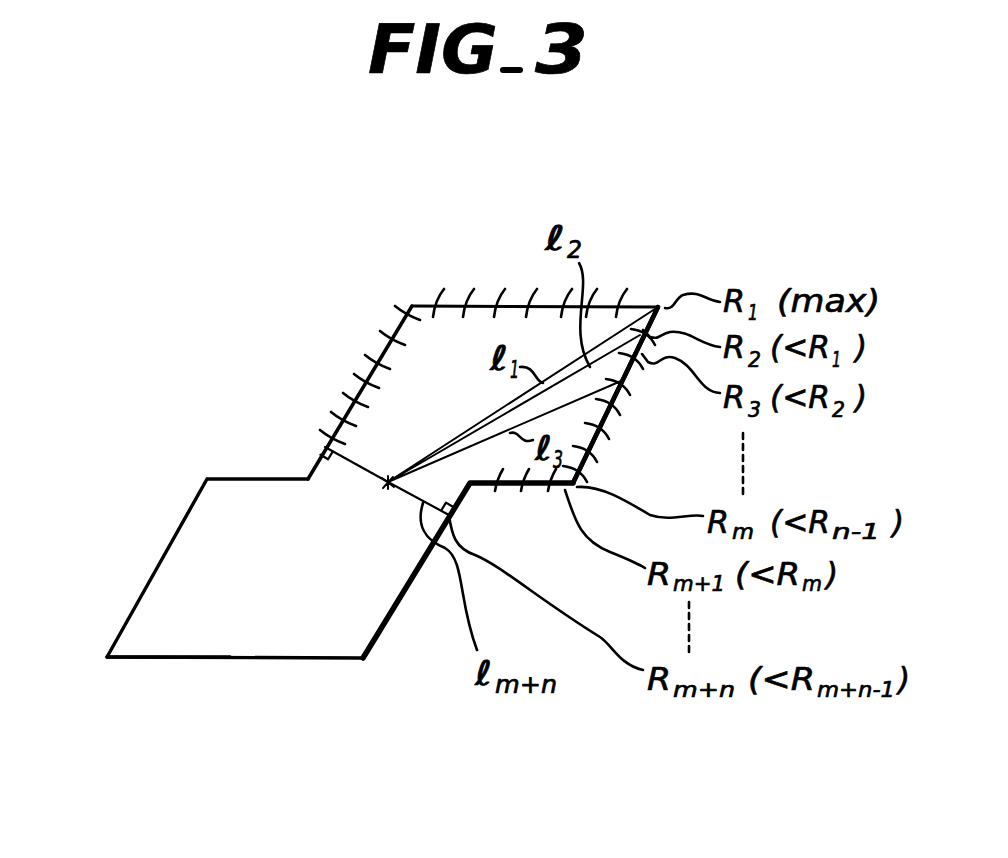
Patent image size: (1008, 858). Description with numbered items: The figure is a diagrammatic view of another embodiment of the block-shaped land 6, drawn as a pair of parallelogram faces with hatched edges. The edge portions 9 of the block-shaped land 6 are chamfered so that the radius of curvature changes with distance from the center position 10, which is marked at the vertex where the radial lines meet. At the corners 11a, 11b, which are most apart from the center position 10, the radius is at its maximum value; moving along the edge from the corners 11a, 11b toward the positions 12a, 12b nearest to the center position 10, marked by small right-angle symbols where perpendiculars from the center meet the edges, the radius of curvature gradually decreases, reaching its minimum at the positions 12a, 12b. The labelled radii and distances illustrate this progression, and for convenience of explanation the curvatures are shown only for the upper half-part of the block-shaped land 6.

The block-shaped land 6 is at (273, 364).
The edge portion 9 is at (307, 660).
The center position 10 is at (391, 488).
The corner 11a is at (658, 306).
The corner 11b is at (105, 659).
The position nearest to the center position 12a is at (450, 513).
The position nearest to the center position 12b is at (320, 445).